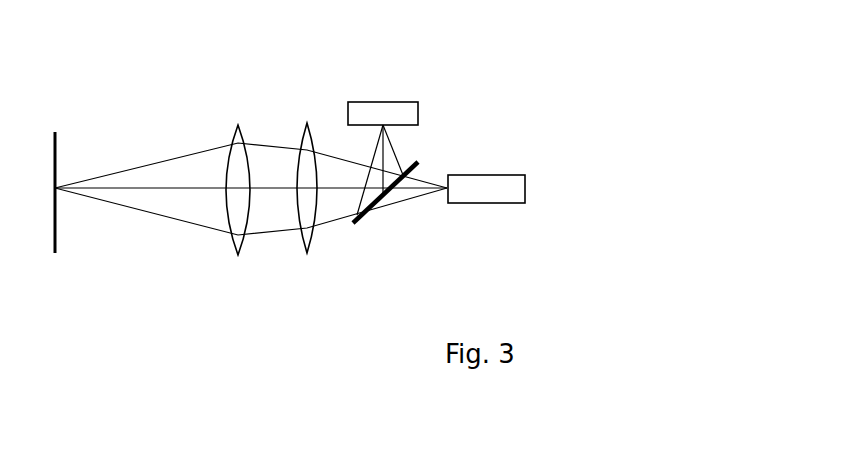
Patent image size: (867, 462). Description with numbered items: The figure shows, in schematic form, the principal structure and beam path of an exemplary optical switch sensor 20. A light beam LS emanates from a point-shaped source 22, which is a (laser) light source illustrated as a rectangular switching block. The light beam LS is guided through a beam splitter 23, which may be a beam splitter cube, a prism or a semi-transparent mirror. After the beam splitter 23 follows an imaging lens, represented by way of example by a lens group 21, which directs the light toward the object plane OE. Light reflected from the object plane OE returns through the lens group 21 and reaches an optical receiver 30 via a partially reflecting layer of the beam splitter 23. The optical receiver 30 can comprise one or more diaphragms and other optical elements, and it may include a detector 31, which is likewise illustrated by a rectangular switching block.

The switch sensor 20 is at (197, 36).
The lens group 21 is at (315, 108).
The source 22 is at (507, 182).
The beam splitter 23 is at (418, 162).
The optical receiver 30 is at (452, 94).
The detector 31 is at (362, 110).
The object plane OE is at (60, 182).
The light beam LS is at (251, 189).